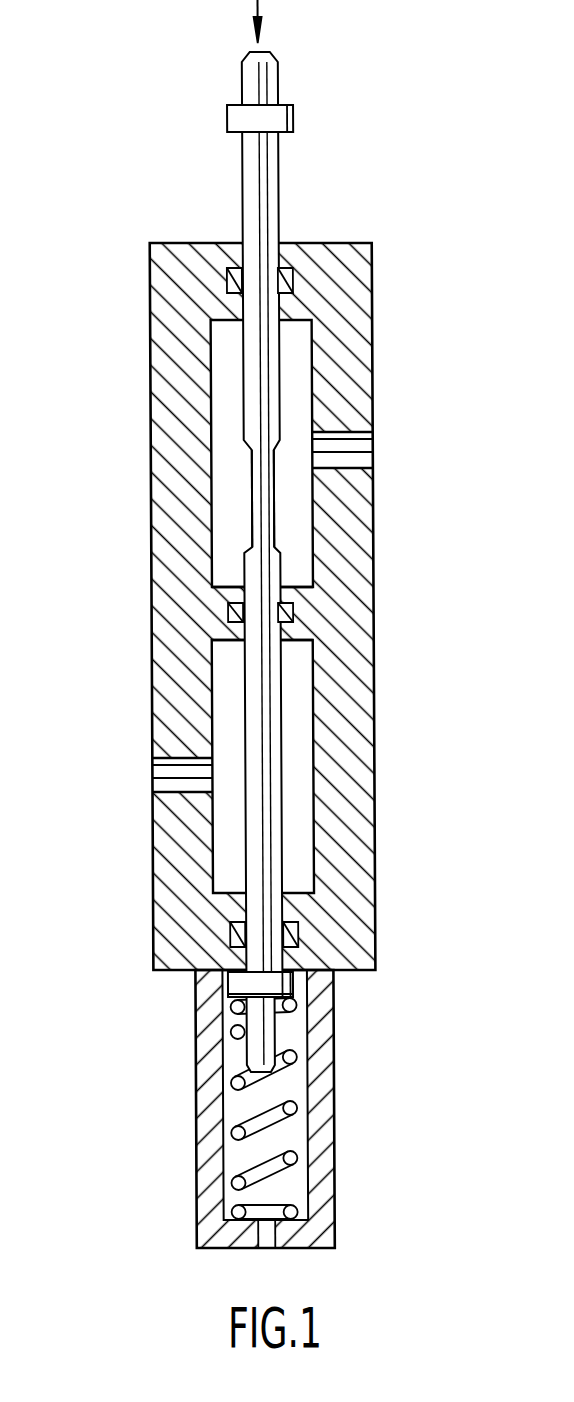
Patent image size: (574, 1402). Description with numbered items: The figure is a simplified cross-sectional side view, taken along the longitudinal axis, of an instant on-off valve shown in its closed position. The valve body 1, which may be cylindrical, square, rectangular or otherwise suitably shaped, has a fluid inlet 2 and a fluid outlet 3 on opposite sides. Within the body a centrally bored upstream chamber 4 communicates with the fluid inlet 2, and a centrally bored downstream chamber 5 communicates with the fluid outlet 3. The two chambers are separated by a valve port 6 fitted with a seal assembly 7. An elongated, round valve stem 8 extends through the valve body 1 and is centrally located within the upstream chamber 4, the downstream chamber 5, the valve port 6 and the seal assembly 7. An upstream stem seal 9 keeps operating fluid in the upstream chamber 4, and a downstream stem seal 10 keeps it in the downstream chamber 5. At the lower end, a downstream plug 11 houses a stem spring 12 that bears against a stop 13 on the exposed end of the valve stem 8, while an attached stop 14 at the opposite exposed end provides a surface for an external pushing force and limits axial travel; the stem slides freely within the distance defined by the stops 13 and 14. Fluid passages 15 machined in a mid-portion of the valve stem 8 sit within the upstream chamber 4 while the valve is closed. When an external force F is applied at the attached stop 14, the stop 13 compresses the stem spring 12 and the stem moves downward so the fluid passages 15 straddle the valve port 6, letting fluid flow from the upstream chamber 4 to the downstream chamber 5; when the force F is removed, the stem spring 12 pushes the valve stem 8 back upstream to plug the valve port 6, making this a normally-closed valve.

The valve body 1 is at (330, 912).
The fluid inlet 2 is at (384, 450).
The fluid outlet 3 is at (118, 775).
The upstream chamber 4 is at (227, 406).
The downstream chamber 5 is at (295, 777).
The valve port 6 is at (283, 583).
The seal assembly 7 is at (287, 612).
The valve stem 8 is at (280, 175).
The upstream stem seal 9 is at (285, 281).
The downstream stem seal 10 is at (233, 940).
The downstream plug 11 is at (207, 1093).
The stem spring 12 is at (292, 1108).
The stop 13 is at (288, 983).
The attached stop 14 is at (238, 117).
The fluid passages 15 is at (257, 497).
The external force F is at (260, 2).